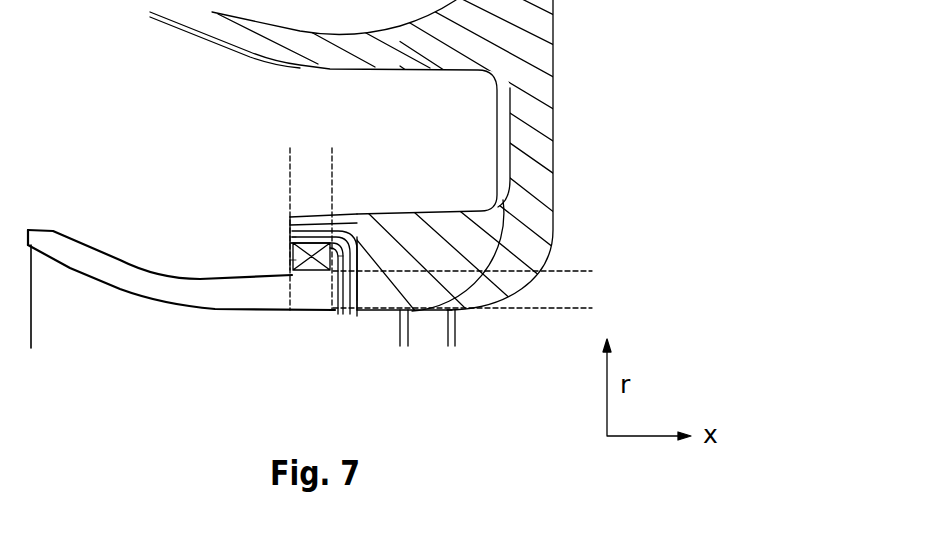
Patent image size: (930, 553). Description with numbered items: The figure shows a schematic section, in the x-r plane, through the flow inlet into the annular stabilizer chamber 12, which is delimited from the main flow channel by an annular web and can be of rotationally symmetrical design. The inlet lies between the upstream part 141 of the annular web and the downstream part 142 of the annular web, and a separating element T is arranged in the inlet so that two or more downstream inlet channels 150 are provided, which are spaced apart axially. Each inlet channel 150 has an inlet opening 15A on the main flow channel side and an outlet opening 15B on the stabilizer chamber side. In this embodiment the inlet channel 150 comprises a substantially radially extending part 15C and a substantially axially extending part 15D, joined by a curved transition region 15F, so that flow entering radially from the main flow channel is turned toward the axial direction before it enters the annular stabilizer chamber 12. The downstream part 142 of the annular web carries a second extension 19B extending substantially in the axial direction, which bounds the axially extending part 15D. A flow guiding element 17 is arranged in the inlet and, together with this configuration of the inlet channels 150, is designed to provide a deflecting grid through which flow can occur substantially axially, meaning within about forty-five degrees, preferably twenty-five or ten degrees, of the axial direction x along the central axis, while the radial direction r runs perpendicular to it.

The annular stabilizer chamber 12 is at (160, 126).
The upstream part of the annular web 141 is at (117, 269).
The downstream part of the annular web 142 is at (457, 212).
The inlet opening 15A is at (340, 315).
The downstream inlet channels 150 is at (356, 315).
The outlet opening 15B is at (281, 237).
The substantially radially extending part 15C is at (592, 271).
The substantially axially extending part 15D is at (332, 148).
The curved transition region 15F is at (358, 234).
The flow guiding element 17 is at (298, 239).
The second extension 19B is at (307, 225).
The separating element T is at (341, 258).